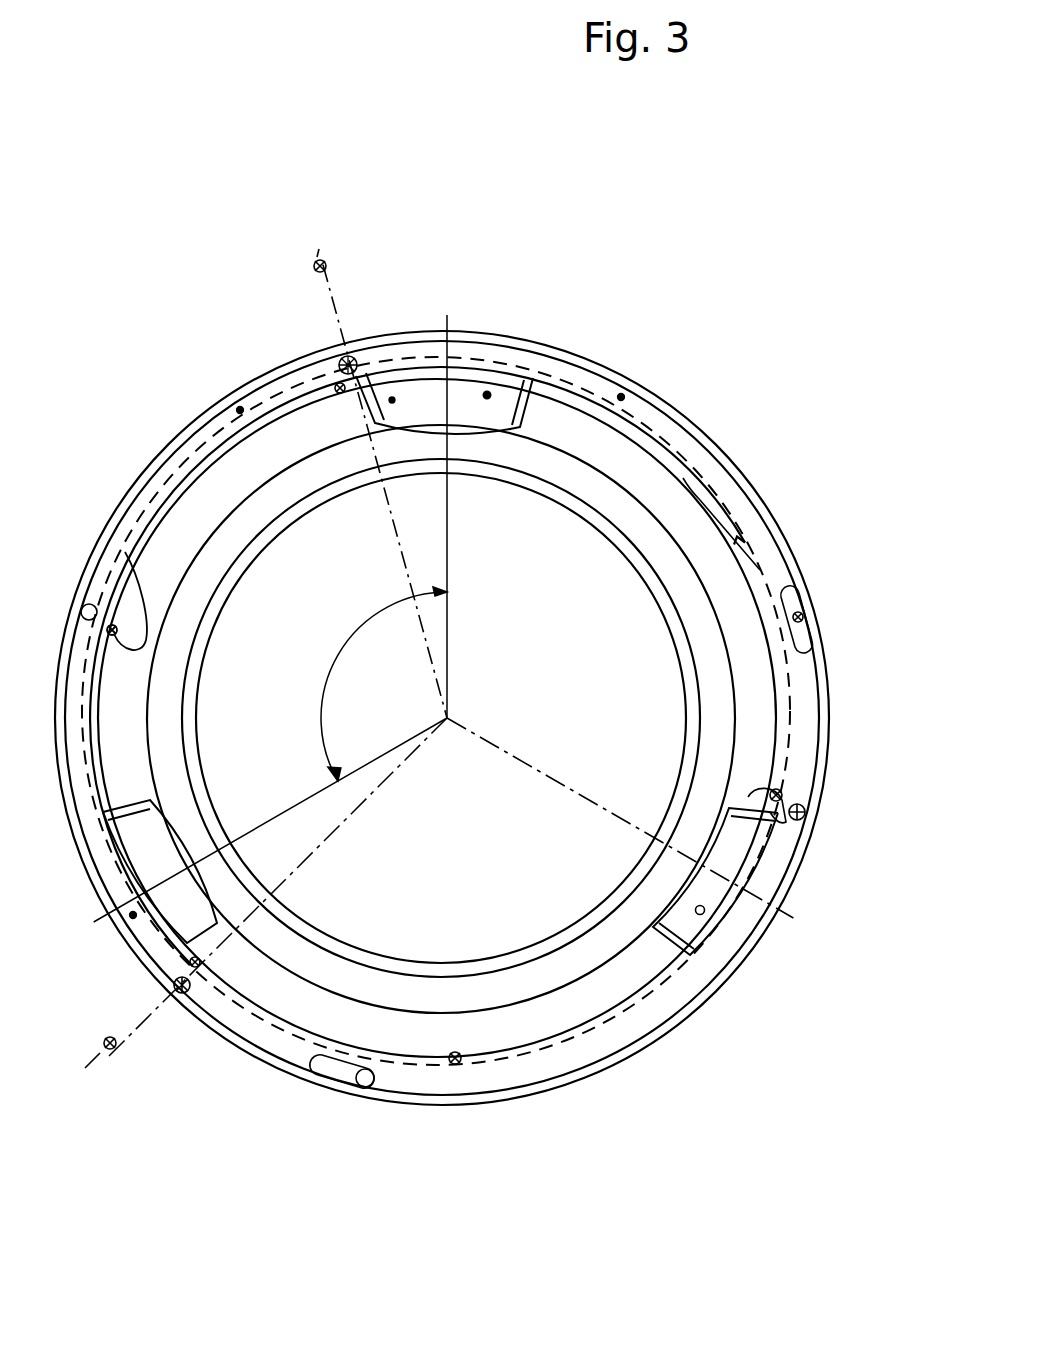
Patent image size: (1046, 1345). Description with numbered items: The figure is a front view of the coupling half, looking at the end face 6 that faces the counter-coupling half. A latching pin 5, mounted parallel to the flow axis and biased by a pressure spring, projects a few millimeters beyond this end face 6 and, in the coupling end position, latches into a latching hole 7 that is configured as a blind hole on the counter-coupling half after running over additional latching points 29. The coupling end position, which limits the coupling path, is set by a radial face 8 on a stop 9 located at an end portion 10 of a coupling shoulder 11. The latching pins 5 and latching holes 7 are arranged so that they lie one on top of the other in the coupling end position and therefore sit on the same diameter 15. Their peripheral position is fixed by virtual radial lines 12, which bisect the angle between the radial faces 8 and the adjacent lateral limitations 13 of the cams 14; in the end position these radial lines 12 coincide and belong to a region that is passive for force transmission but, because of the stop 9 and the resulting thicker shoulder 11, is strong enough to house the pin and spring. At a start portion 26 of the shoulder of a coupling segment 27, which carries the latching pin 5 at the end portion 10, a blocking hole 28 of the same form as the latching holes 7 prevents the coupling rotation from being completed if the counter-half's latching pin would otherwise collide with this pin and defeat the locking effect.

The latching pin 5 is at (358, 362).
The end face 6 is at (623, 395).
The latching hole 7 is at (798, 610).
The radial face 8 is at (336, 386).
The stop 9 is at (729, 812).
The end portion 10 is at (222, 945).
The coupling shoulder 11 is at (456, 1063).
The virtual radial line 12 is at (330, 262).
The lateral limitation 13 is at (394, 396).
The cam 14 is at (490, 393).
The diameter 15 is at (238, 408).
The start portion 26 is at (125, 552).
The coupling segment 27 is at (384, 684).
The blocking hole 28 is at (93, 604).
The additional latching point 29 is at (800, 598).